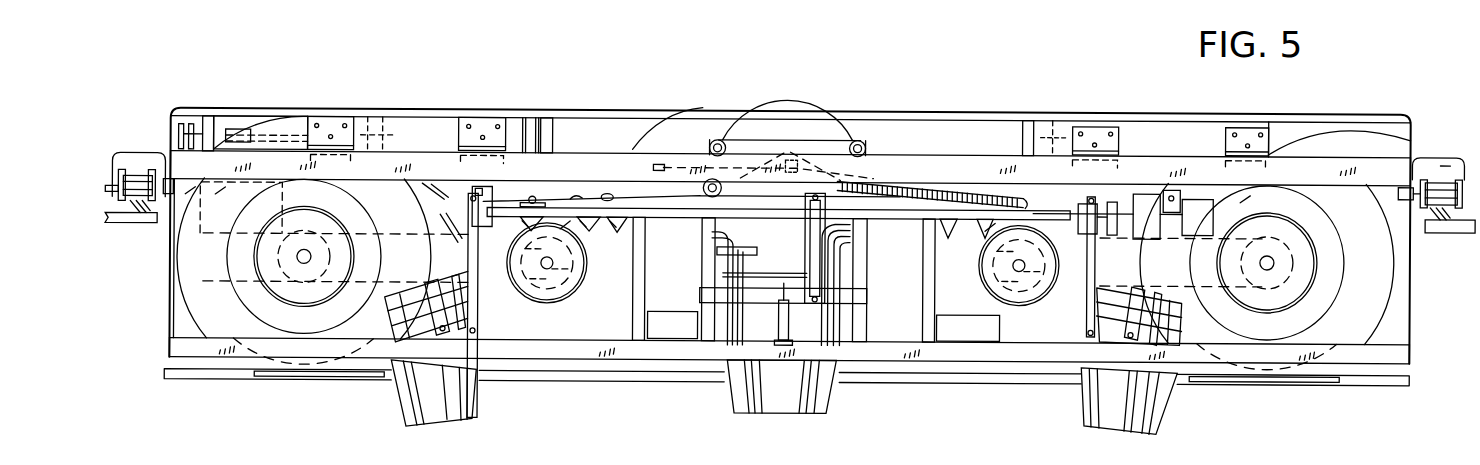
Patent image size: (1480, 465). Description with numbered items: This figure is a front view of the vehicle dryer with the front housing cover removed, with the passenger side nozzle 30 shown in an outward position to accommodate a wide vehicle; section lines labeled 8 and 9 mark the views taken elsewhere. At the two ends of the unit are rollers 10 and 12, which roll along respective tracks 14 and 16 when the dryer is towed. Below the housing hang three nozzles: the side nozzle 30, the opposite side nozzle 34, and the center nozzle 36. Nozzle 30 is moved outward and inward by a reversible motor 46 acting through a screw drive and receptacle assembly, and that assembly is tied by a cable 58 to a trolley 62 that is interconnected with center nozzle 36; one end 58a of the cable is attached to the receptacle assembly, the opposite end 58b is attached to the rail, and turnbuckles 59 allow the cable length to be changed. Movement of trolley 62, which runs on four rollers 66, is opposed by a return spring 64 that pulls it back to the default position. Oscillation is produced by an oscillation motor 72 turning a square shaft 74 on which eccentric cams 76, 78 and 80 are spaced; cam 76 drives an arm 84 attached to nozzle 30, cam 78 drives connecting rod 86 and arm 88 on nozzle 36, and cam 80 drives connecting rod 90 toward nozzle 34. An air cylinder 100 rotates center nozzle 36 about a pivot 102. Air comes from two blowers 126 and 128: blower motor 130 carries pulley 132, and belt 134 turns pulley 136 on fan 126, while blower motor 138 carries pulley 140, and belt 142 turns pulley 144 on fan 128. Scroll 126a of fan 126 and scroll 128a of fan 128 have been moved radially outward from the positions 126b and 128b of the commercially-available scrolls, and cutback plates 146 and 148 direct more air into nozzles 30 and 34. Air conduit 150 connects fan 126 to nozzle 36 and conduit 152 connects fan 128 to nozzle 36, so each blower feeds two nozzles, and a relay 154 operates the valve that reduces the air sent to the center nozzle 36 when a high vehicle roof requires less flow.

The roller 10 is at (140, 178).
The roller 12 is at (1438, 190).
The track 14 is at (143, 210).
The track 16 is at (1433, 228).
The nozzle 30 is at (480, 408).
The nozzle 34 is at (1165, 404).
The center nozzle 36 is at (740, 387).
The reversible motor 46 is at (215, 233).
The cable 58 is at (682, 166).
The end of cable 58a is at (532, 197).
The opposite end of cable 58b is at (655, 166).
The turnbuckles 59 is at (660, 160).
The trolley 62 is at (707, 307).
The return spring 64 is at (953, 190).
The rollers 66 is at (853, 143).
The oscillation motor 72 is at (1195, 207).
The shaft 74 is at (687, 213).
The eccentric cam 76 is at (472, 205).
The eccentric cam 78 is at (817, 222).
The eccentric cam 80 is at (1090, 205).
The arm 84 is at (478, 383).
The connecting rod 86 is at (817, 272).
The arm 88 is at (807, 300).
The connecting rod 90 is at (1088, 257).
The air cylinder 100 is at (765, 302).
The pivot 102 is at (713, 322).
The blower 126 is at (200, 283).
The scroll 126a is at (291, 367).
The position 126b is at (305, 352).
The blower 128 is at (1353, 308).
The scroll 128a is at (1300, 372).
The position 128b is at (1330, 340).
The blower motor 130 is at (549, 304).
The pulley 132 is at (570, 283).
The belt 134 is at (440, 226).
The pulley 136 is at (292, 282).
The blower motor 138 is at (1018, 310).
The pulley 140 is at (992, 285).
The belt 142 is at (1077, 292).
The pulley 144 is at (1290, 270).
The cutback plate 146 is at (470, 275).
The cutback plate 148 is at (1103, 283).
The air conduit 150 is at (703, 133).
The conduit 152 is at (900, 137).
The relay 154 is at (752, 250).
The section line 8- 8 is at (897, 428).
The section line 9- 9 is at (385, 448).